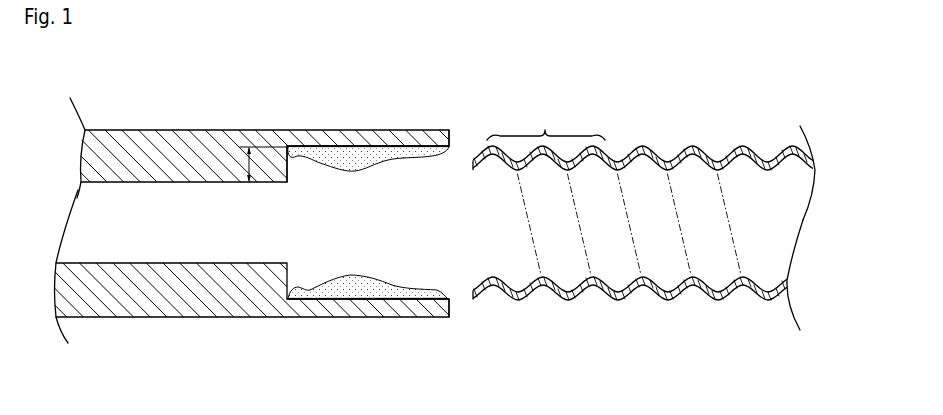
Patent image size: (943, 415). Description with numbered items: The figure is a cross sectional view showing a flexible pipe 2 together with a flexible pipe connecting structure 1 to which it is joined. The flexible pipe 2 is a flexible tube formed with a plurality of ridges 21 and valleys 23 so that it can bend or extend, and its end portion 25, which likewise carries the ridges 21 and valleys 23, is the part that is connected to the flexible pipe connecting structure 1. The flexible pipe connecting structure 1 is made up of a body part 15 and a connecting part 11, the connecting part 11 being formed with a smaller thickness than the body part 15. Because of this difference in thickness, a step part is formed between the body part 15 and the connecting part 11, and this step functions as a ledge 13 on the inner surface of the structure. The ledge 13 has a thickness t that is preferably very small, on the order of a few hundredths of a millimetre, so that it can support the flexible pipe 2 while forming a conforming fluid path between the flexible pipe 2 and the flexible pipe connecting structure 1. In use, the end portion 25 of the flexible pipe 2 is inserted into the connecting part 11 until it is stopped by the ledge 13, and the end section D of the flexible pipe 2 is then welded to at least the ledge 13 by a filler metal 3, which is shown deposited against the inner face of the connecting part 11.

The flexible pipe connecting structure 1 is at (160, 321).
The body part 15 is at (139, 157).
The connecting part 11 is at (365, 131).
The ledge 13 is at (280, 160).
The thickness t is at (248, 156).
The filler metal 3 is at (357, 276).
The flexible pipe 2 is at (629, 219).
The ridges 21 is at (572, 298).
The valleys 23 is at (603, 297).
The end portion 25 is at (546, 120).
The end section D is at (471, 158).